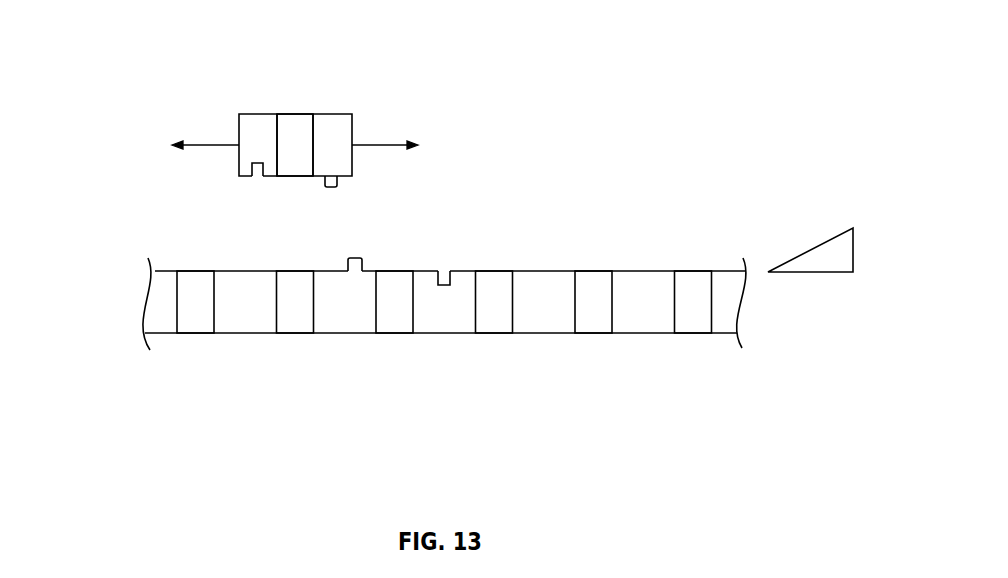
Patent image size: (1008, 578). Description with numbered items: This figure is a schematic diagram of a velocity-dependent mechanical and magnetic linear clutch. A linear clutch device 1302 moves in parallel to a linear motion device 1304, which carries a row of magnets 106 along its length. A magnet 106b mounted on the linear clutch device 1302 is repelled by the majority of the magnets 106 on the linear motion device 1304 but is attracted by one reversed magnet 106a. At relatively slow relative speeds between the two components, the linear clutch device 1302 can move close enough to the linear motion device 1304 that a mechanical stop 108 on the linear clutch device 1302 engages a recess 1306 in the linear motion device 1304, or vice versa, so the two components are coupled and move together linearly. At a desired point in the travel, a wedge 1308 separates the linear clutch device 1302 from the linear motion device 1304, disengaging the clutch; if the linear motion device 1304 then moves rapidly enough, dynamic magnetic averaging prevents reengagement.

The magnets 106 is at (197, 333).
The magnet 106a is at (397, 333).
The magnet 106b is at (295, 113).
The mechanical stop 108 is at (331, 188).
The linear clutch device 1302 is at (332, 113).
The linear motion device 1304 is at (645, 271).
The recess 1306 is at (257, 169).
The wedge 1308 is at (812, 248).